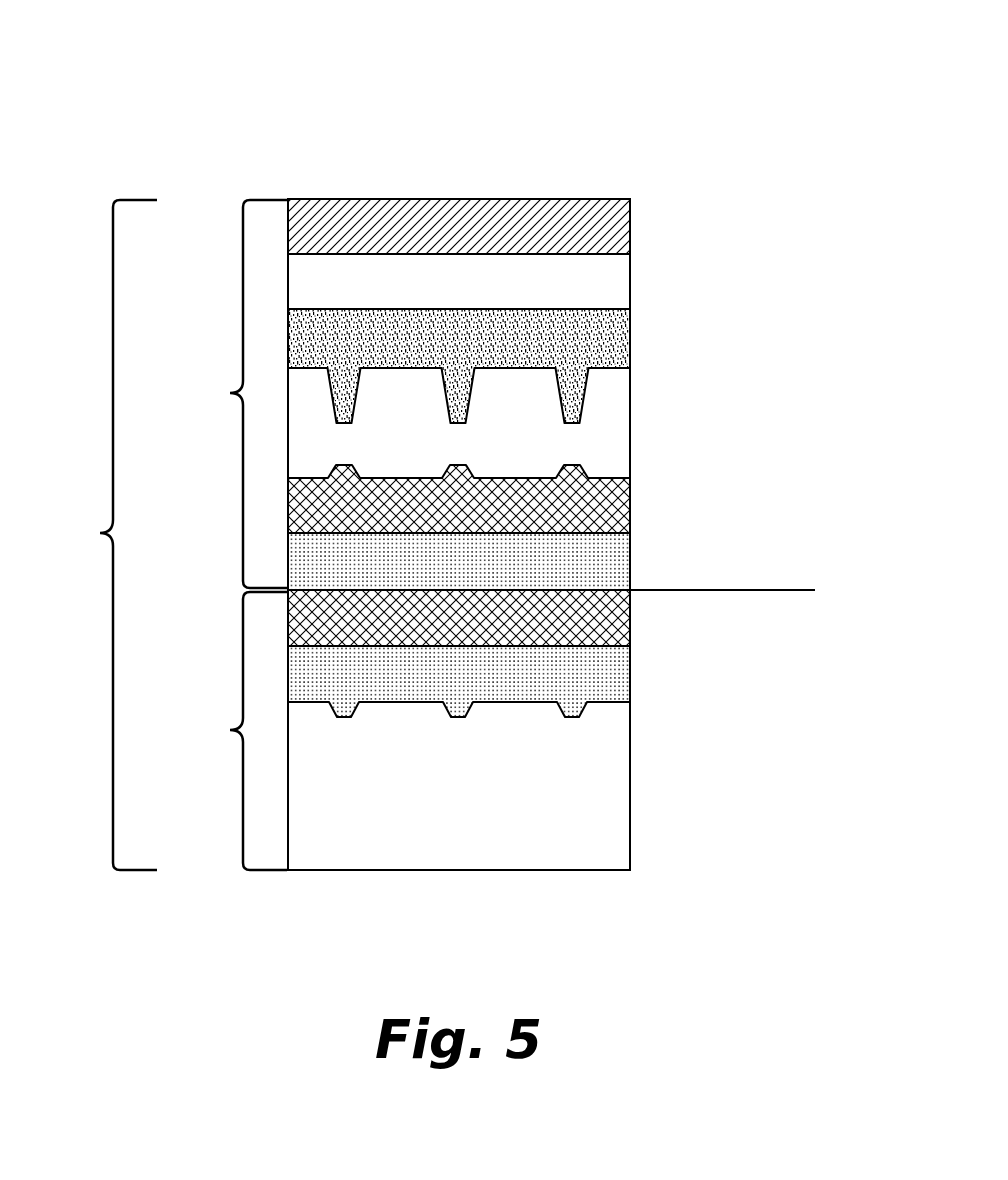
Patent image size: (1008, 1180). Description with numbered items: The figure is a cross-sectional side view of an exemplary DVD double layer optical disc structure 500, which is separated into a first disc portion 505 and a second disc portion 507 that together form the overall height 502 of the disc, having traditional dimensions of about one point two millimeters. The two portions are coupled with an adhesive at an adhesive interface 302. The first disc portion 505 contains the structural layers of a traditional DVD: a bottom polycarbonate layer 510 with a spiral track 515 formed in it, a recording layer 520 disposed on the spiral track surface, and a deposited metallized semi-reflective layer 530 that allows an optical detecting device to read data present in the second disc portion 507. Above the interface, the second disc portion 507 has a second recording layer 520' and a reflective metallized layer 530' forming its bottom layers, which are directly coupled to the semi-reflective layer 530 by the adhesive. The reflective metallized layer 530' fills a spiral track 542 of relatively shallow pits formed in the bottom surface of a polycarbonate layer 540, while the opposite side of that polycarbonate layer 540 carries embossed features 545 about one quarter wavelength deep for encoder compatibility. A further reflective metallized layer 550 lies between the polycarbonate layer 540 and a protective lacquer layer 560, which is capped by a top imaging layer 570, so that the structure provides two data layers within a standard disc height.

The DVD double layer optical disc structure 500 is at (783, 123).
The overall height 502 is at (96, 535).
The first disc portion 505 is at (228, 731).
The second disc portion 507 is at (229, 394).
The bottom polycarbonate layer 510 is at (630, 786).
The spiral track 515 is at (630, 702).
The recording layer 520 is at (527, 681).
The second recording layer 520' is at (530, 561).
The metallized semi-reflective layer 530 is at (527, 618).
The reflective metallized layer 530' is at (530, 499).
The adhesive interface 302 is at (582, 591).
The polycarbonate layer 540 is at (630, 441).
The spiral track 542 is at (630, 460).
The embossed features 545 is at (630, 368).
The reflective metallized layer 550 is at (630, 351).
The protective lacquer layer 560 is at (630, 289).
The top imaging layer 570 is at (630, 230).